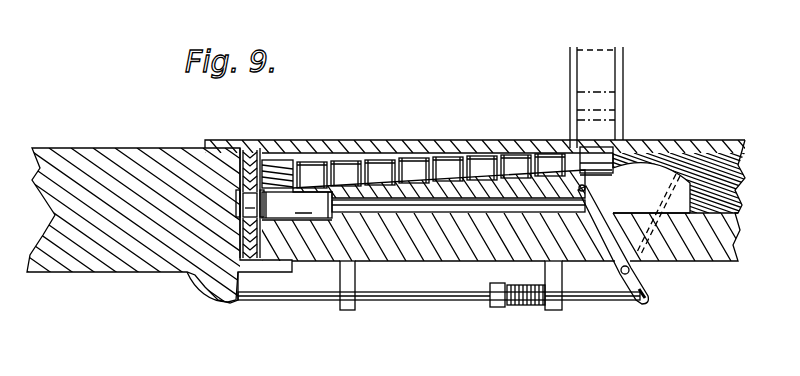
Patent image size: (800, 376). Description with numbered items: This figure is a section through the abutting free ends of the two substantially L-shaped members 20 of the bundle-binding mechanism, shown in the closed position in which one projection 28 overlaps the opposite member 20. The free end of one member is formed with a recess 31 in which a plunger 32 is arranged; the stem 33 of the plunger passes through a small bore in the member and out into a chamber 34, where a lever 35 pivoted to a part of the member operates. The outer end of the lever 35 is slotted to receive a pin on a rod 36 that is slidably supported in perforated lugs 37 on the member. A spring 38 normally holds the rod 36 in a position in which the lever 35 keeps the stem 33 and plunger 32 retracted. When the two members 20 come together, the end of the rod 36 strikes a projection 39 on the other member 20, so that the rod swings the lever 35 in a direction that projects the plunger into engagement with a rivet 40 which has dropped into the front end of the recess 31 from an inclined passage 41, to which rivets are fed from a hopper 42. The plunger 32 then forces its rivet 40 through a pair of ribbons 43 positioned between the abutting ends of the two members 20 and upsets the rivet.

The L-shaped member 20 is at (68, 148).
The projection 28 is at (247, 146).
The recess 31 is at (380, 214).
The plunger 32 is at (293, 207).
The stem 33 is at (443, 202).
The chamber 34 is at (645, 176).
The lever 35 is at (655, 248).
The rod 36 is at (600, 301).
The perforated lug 37 is at (348, 312).
The spring 38 is at (522, 307).
The projection 39 is at (222, 294).
The rivet 40 is at (245, 215).
The inclined passage 41 is at (410, 152).
The hopper 42 is at (623, 66).
The ribbon 43 is at (267, 147).